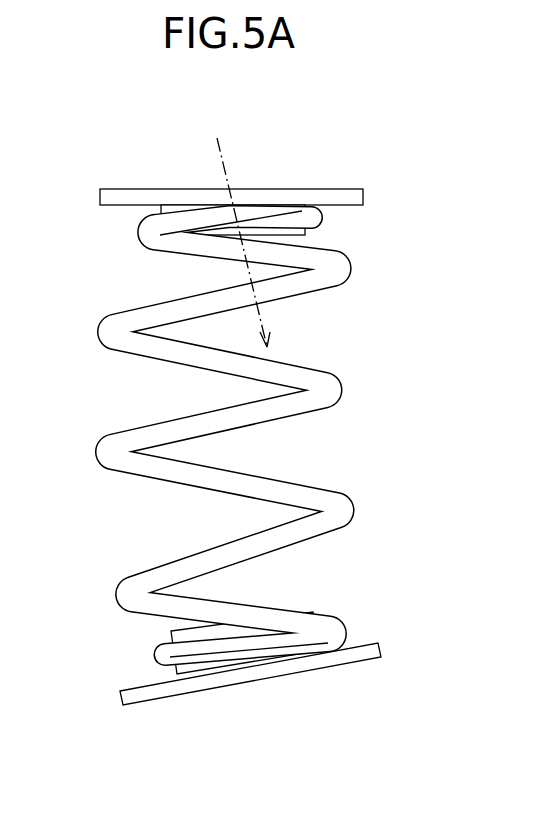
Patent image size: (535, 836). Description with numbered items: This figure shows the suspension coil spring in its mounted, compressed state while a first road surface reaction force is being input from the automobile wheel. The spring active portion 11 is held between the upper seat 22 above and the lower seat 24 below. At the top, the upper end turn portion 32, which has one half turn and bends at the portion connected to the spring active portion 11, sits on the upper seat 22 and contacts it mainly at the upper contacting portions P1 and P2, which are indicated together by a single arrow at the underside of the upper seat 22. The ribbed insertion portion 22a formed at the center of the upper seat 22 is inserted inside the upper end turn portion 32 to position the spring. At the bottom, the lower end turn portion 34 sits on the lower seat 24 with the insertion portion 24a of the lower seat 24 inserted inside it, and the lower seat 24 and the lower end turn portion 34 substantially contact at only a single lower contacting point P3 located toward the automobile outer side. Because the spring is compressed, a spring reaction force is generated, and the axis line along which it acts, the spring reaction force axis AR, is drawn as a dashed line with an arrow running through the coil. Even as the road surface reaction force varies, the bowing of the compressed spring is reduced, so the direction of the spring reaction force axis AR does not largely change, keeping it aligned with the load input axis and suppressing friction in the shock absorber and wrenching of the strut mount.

The spring active portion 11 is at (216, 440).
The upper seat 22 is at (136, 180).
The insertion portion 22a is at (160, 209).
The lower seat 24 is at (262, 698).
The insertion portion 24a is at (193, 674).
The upper end turn portion 32 is at (233, 440).
The lower end turn portion 34 is at (163, 654).
The upper contacting portion P1 is at (237, 190).
The upper contacting portion P2 is at (236, 198).
The lower contacting point P3 is at (352, 641).
The spring reaction force axis AR is at (258, 309).